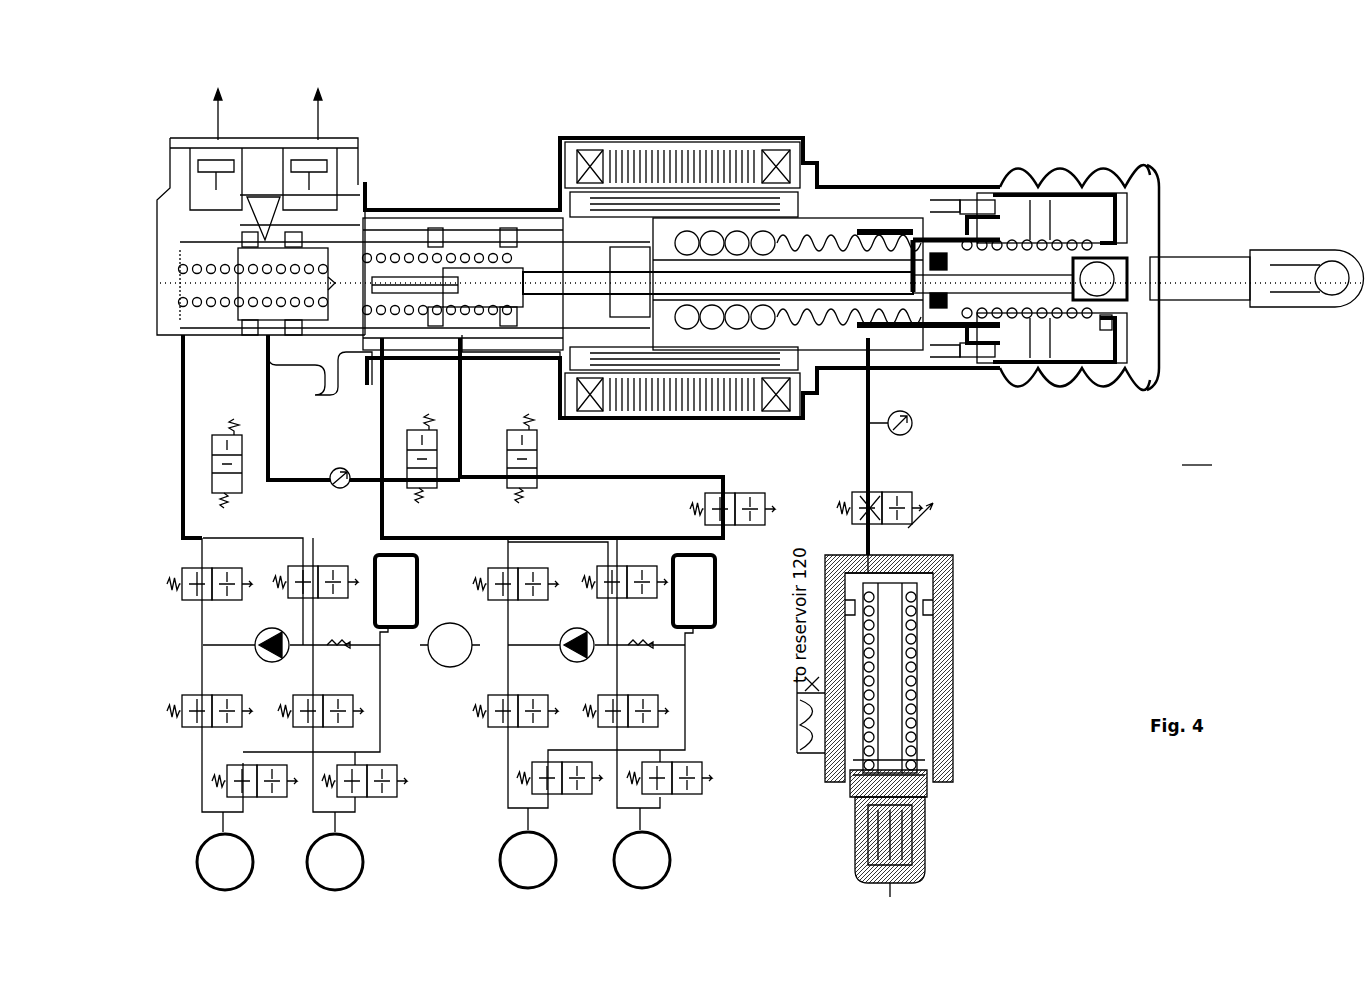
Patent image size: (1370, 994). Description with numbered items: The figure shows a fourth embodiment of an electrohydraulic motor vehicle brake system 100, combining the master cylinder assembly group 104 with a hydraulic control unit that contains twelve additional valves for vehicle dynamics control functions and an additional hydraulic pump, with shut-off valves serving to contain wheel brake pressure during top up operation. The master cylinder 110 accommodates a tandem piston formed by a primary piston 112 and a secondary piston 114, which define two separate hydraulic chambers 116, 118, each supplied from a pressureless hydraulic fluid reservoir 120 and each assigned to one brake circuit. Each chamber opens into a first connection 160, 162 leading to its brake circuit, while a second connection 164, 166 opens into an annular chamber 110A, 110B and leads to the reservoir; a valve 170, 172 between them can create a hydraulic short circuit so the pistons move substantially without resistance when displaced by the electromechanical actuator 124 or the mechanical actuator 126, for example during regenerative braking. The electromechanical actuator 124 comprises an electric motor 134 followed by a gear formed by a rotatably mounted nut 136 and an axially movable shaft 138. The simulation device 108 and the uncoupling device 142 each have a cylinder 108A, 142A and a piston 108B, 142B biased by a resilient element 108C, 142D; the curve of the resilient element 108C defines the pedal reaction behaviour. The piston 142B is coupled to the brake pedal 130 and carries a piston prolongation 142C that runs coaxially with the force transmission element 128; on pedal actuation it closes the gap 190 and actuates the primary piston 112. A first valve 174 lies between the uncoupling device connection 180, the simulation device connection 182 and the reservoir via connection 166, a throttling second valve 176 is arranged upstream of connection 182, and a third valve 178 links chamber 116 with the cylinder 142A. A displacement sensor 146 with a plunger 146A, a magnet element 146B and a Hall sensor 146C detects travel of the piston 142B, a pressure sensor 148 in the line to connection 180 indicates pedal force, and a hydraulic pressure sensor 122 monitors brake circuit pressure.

The motor vehicle brake system 100 is at (1197, 455).
The master cylinder assembly group 104 is at (1082, 524).
The simulation device 108 is at (953, 775).
The cylinder 108A is at (930, 728).
The piston 108B is at (927, 647).
The resilient element 108C is at (923, 760).
The master cylinder 110 is at (383, 238).
The annular chamber 110A is at (265, 238).
The annular chamber 110B is at (457, 235).
The primary piston 112 is at (546, 301).
The secondary piston 114 is at (362, 301).
The hydraulic chamber 116 is at (420, 318).
The hydraulic chamber 118 is at (225, 313).
The hydraulic fluid reservoir 120 is at (265, 101).
The hydraulic pressure sensor 122 is at (331, 473).
The electromechanical actuator 124 is at (819, 150).
The mechanical actuator 126 is at (1233, 223).
The force transmission element 128 is at (812, 277).
The brake pedal 130 is at (1265, 303).
The electric motor 134 is at (637, 165).
The nut 136 is at (730, 228).
The shaft 138 is at (668, 258).
The uncoupling device 142 is at (1078, 223).
The cylinder 142A is at (1003, 333).
The piston 142B is at (1018, 300).
The piston prolongation 142C is at (1030, 318).
The resilient element 142D is at (1085, 313).
The displacement sensor 146 is at (1072, 155).
The plunger 146A is at (1093, 197).
The magnet element 146B is at (992, 197).
The Hall sensor 146C is at (935, 205).
The pressure sensor 148 is at (912, 416).
The first connection 160 is at (185, 333).
The first connection 162 is at (380, 386).
The second connection 164 is at (268, 345).
The second connection 166 is at (462, 363).
The valve 170 is at (243, 492).
The valve 172 is at (427, 445).
The first valve 174 is at (528, 472).
The second valve 176 is at (907, 500).
The third valve 178 is at (713, 518).
The connection 180 is at (870, 333).
The connection 182 is at (873, 553).
The gap 190 is at (915, 268).